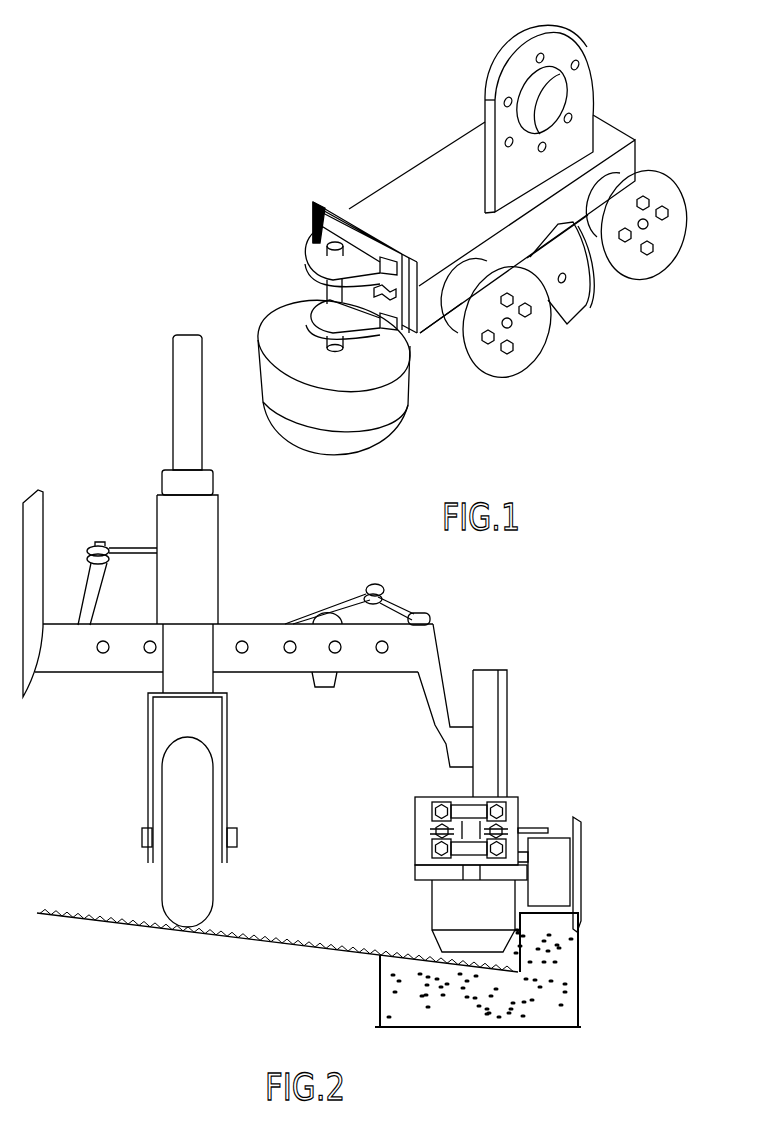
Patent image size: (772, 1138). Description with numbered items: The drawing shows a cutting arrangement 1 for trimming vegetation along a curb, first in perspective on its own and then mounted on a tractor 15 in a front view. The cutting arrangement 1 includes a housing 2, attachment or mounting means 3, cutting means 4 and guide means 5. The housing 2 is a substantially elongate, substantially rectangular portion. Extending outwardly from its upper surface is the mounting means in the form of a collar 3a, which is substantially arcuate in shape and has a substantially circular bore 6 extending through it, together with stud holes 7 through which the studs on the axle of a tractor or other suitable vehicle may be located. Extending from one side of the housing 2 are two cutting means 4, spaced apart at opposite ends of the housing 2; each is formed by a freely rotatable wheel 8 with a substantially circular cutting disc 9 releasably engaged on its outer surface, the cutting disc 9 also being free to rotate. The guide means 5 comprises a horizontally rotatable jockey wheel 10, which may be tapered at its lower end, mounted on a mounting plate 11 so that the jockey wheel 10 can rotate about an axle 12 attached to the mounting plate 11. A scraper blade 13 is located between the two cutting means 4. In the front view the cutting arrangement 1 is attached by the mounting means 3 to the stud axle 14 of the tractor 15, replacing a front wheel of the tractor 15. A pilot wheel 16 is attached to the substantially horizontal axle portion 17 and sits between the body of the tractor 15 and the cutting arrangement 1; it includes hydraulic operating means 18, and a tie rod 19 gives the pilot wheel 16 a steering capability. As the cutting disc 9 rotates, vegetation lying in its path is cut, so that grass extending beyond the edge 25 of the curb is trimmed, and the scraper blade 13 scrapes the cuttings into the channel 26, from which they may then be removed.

In FIG. 1, the cutting arrangement 1 is at (494, 402).
In FIG. 2, the cutting arrangement 1 is at (552, 794).
In FIG. 1, the housing 2 is at (457, 172).
In FIG. 1, the attachment or mounting means 3 is at (521, 39).
In FIG. 1, the collar 3a is at (583, 65).
In FIG. 1, the cutting means 4 is at (524, 372).
In FIG. 1, the guide means 5 is at (340, 390).
In FIG. 1, the circular bore 6 is at (548, 108).
In FIG. 1, the stud holes 7 is at (484, 102).
In FIG. 1, the freely rotatable wheel 8 is at (465, 322).
In FIG. 1, the cutting disc 9 is at (534, 336).
In FIG. 1, the jockey wheel 10 is at (352, 432).
In FIG. 1, the mounting plate 11 is at (398, 302).
In FIG. 1, the axle 12 is at (330, 299).
In FIG. 1, the scraper blade 13 is at (576, 305).
In FIG. 2, the stud axle 14 is at (454, 745).
In FIG. 2, the tractor 15 is at (38, 688).
In FIG. 2, the pilot wheel 16 is at (139, 826).
In FIG. 2, the horizontal axle portion 17 is at (236, 633).
In FIG. 2, the hydraulic operating means 18 is at (156, 452).
In FIG. 2, the tie rod 19 is at (112, 544).
In FIG. 2, the edge 25 is at (574, 938).
In FIG. 2, the channel 26 is at (506, 966).